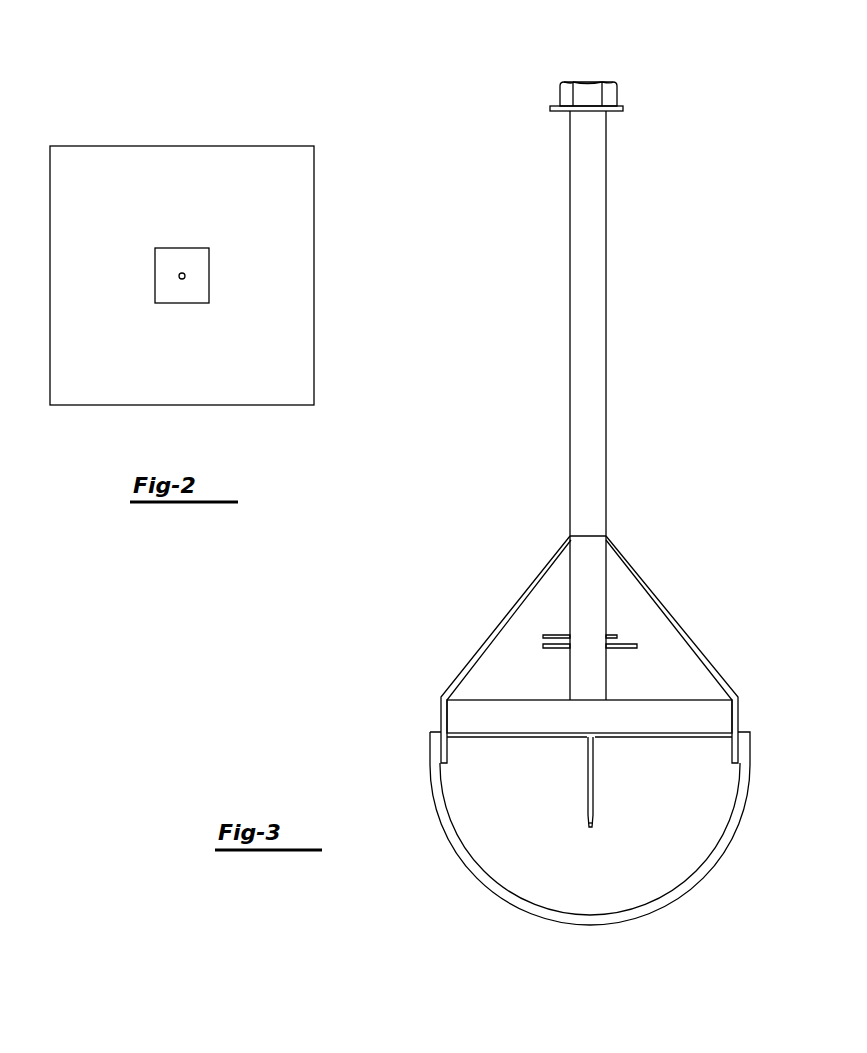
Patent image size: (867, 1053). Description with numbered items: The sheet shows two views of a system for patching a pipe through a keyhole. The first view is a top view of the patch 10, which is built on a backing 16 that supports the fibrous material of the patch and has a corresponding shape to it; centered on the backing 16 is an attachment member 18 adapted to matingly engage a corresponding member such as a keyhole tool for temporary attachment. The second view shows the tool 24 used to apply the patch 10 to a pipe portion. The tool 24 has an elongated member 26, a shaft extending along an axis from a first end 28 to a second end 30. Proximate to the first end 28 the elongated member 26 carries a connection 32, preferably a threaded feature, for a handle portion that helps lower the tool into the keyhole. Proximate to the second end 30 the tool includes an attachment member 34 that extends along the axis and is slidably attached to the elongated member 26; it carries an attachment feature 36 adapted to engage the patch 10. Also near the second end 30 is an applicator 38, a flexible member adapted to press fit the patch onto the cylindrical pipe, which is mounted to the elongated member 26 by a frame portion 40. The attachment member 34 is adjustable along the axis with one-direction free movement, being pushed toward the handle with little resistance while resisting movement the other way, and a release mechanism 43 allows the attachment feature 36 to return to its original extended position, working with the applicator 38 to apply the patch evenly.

In FIG. 2, the patch 10 is at (228, 268).
In FIG. 2, the backing 16 is at (119, 217).
In FIG. 2, the attachment member 18 is at (197, 265).
In FIG. 3, the tool 24 is at (615, 360).
In FIG. 3, the elongated member 26 is at (593, 317).
In FIG. 3, the first end 28 is at (654, 68).
In FIG. 3, the second end 30 is at (486, 616).
In FIG. 3, the connection 32 is at (623, 70).
In FIG. 3, the attachment member 34 is at (593, 784).
In FIG. 3, the attachment feature 36 is at (588, 832).
In FIG. 3, the applicator 38 is at (700, 875).
In FIG. 3, the frame portion 40 is at (443, 707).
In FIG. 3, the release mechanism 43 is at (643, 626).